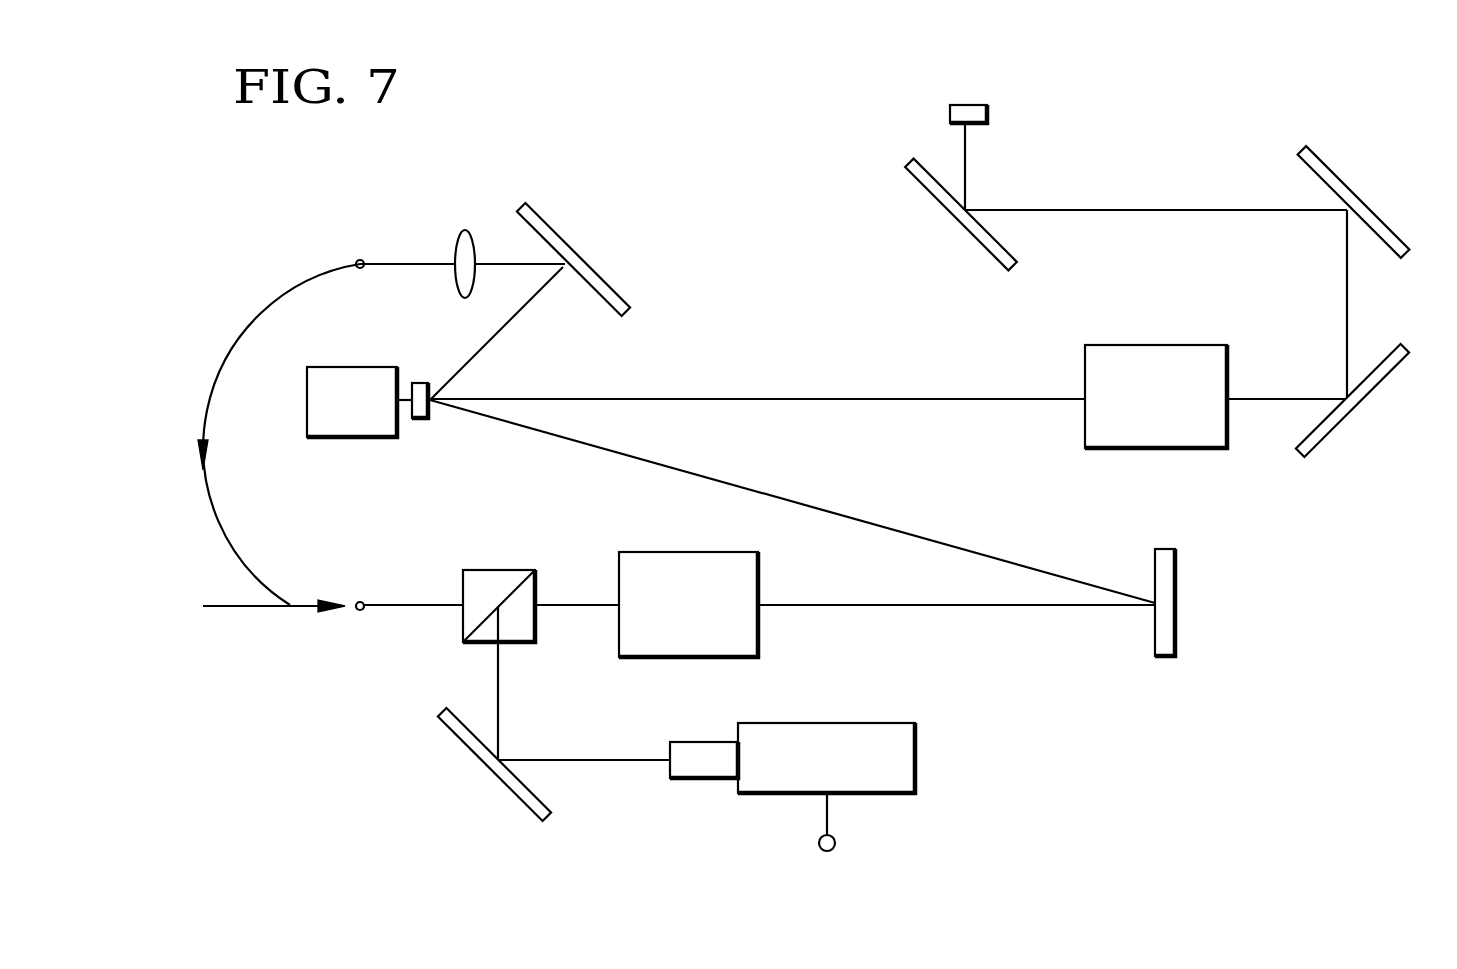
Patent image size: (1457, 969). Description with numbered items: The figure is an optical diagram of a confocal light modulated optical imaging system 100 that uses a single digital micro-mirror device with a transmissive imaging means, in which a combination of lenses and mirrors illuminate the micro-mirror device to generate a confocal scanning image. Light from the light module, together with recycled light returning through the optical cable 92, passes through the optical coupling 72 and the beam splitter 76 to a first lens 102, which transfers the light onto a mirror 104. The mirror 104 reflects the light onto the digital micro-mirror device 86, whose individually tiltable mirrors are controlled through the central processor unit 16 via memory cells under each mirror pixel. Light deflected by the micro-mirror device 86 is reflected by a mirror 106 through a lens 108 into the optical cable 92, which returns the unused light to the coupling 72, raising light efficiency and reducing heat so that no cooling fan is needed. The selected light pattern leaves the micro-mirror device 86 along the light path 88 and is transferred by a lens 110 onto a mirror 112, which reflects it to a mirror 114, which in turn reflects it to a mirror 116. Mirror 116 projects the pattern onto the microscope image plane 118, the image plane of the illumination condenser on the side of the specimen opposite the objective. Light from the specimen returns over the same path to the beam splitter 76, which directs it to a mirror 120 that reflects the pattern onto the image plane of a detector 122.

The central processor unit 16 is at (340, 367).
The optical coupling 72 is at (410, 610).
The beam splitter 76 is at (498, 570).
The digital micro-mirror device 86 is at (420, 418).
The light path 88 is at (888, 400).
The optical cable 92 is at (220, 512).
The confocal light modulated optical imaging system 100 is at (1240, 654).
The first lens 102 is at (758, 640).
The mirror 104 is at (1176, 583).
The mirror 106 is at (577, 245).
The lens 108 is at (463, 230).
The lens 110 is at (1167, 448).
The mirror 112 is at (1333, 432).
The mirror 114 is at (1330, 165).
The mirror 116 is at (970, 228).
The microscope image plane 118 is at (973, 105).
The mirror 120 is at (457, 737).
The detector 122 is at (915, 748).